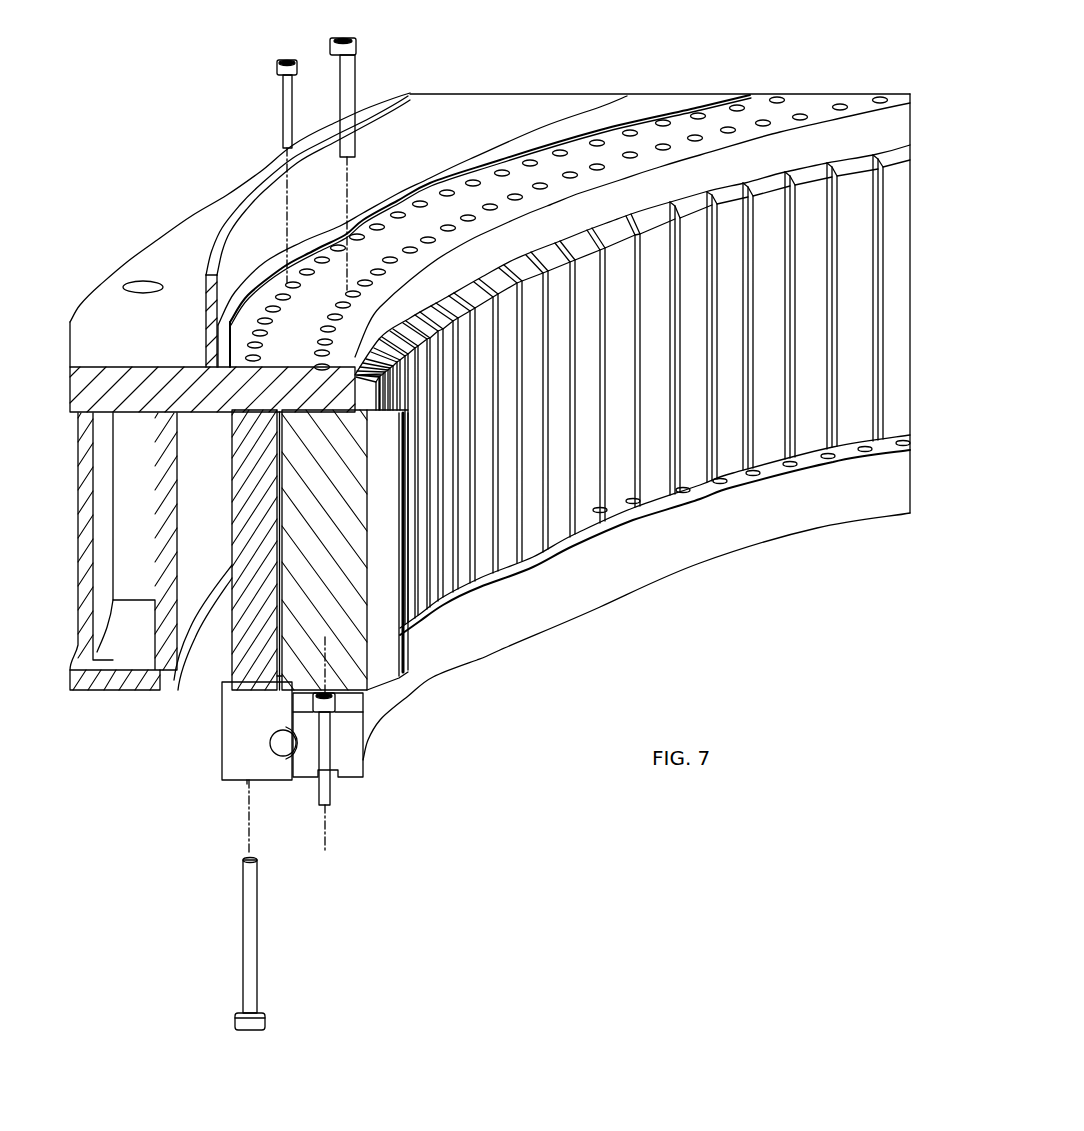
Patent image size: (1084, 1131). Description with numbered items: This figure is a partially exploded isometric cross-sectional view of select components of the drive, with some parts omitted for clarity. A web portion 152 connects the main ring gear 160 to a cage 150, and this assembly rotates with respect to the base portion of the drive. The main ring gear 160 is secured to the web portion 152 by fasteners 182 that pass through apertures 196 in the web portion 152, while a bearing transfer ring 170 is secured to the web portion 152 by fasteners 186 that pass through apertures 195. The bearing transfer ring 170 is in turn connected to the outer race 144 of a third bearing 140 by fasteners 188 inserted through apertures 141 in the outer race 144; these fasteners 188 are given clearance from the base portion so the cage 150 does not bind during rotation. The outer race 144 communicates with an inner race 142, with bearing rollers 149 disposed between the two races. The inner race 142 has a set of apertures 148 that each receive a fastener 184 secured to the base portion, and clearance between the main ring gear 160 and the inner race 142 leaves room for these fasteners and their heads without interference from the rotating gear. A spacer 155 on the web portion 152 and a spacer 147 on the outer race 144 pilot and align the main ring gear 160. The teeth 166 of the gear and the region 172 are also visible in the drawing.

The third bearing 140 is at (286, 796).
The apertures 141 is at (247, 784).
The inner race 142 is at (345, 765).
The outer race 144 is at (268, 734).
The spacer 147 is at (276, 680).
The apertures 148 is at (863, 448).
The bearing rollers 149 is at (272, 748).
The cage 150 is at (106, 700).
The web portion 152 is at (228, 399).
The spacer 155 is at (284, 420).
The main ring gear 160 is at (338, 544).
The teeth 166 is at (595, 395).
The bearing transfer ring 170 is at (268, 542).
The recess 172 is at (262, 643).
The fasteners 182 is at (347, 97).
The fastener 184 is at (327, 750).
The fasteners 186 is at (282, 108).
The fasteners 188 is at (248, 938).
The apertures 195 is at (737, 105).
The apertures 196 is at (625, 156).